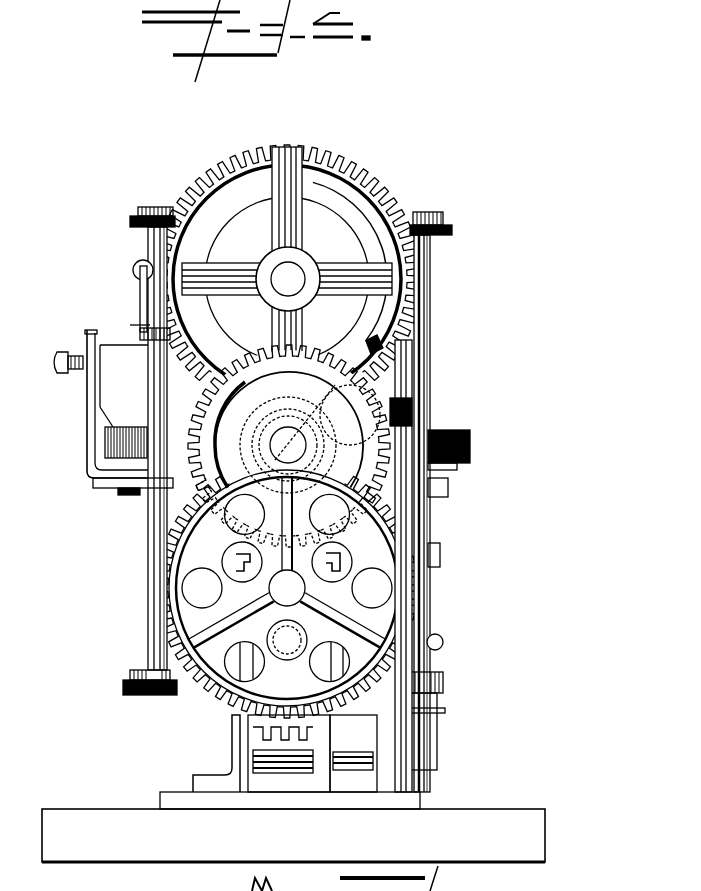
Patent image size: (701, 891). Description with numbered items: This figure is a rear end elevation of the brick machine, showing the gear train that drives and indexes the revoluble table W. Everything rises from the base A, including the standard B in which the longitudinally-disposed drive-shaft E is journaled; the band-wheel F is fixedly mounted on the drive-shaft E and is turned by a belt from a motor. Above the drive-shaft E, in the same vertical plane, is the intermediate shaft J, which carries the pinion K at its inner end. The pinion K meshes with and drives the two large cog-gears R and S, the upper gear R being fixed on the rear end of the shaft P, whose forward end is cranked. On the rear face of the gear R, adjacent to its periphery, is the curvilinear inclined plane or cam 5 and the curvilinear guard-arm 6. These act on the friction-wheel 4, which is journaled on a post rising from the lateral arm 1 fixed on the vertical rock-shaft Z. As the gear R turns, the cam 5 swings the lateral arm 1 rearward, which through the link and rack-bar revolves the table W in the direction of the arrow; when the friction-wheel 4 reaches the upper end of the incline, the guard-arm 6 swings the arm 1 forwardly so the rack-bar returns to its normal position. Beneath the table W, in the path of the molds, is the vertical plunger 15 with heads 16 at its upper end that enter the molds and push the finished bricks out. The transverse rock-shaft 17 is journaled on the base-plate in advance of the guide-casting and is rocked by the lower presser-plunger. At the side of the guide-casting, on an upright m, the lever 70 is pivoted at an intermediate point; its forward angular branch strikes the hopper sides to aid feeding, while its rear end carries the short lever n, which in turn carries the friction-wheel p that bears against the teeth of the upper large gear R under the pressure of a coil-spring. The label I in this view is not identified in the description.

The large cog-gear R is at (287, 258).
The curvilinear inclined plane or cam 5 is at (218, 180).
The curvilinear guard-arm 6 is at (365, 195).
The shaft P is at (292, 281).
The intermediate gear I is at (288, 443).
The intermediate shaft J is at (280, 442).
The large cog-gear S is at (190, 690).
The drive-shaft E is at (273, 590).
The upright m is at (150, 243).
The friction-wheel p is at (140, 270).
The short lever n is at (148, 300).
The lever 70 is at (139, 325).
The vertical plunger 15 is at (440, 508).
The lateral arm 1 is at (407, 395).
The pinion K is at (312, 447).
The friction-wheel 4 is at (372, 395).
The revoluble table W is at (470, 447).
The heads 16 is at (448, 490).
The vertical rock-shaft Z is at (440, 515).
The band-wheel F is at (445, 645).
The standard B is at (240, 742).
The transverse rock-shaft 17 is at (355, 753).
The base A is at (293, 835).